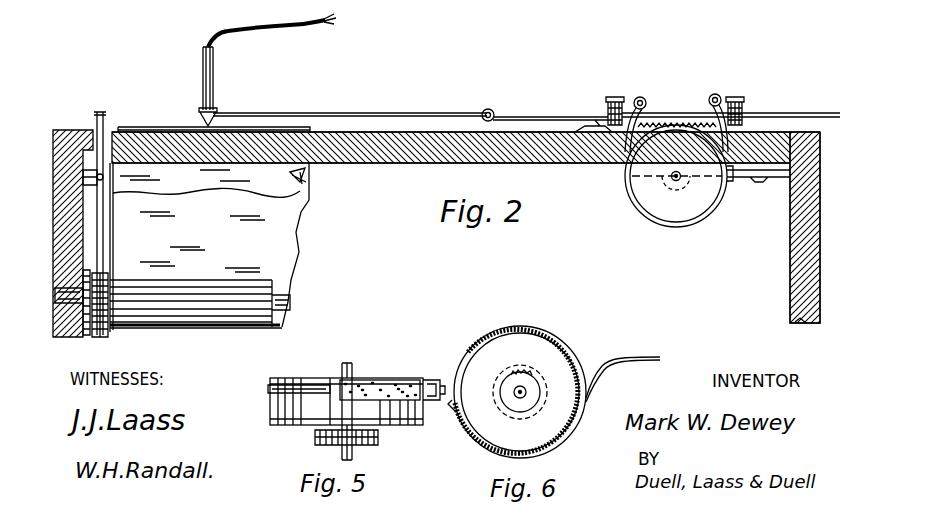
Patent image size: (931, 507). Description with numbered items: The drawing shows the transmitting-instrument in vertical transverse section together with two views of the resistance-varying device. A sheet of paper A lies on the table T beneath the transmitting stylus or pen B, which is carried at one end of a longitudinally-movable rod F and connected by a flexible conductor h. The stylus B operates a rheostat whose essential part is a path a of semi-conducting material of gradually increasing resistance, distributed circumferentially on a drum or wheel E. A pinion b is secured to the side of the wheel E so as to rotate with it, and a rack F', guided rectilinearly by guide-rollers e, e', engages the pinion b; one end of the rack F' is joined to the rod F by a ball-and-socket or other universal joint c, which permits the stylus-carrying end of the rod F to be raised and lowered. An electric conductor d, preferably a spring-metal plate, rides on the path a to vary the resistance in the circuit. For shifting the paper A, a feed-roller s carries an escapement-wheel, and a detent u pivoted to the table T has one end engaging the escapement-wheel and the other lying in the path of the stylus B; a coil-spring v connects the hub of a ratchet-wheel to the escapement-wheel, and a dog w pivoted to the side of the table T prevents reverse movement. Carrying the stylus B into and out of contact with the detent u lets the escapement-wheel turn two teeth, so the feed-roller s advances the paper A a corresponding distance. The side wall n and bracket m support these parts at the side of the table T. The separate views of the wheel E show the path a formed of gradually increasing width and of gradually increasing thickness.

In FIG. 2, the table T is at (466, 227).
In FIG. 2, the side wall n is at (73, 233).
In FIG. 2, the bracket m is at (84, 222).
In FIG. 2, the detent u is at (93, 219).
In FIG. 2, the sheet of paper A is at (170, 127).
In FIG. 2, the feed-roller s is at (256, 325).
In FIG. 2, the coil-spring v is at (78, 320).
In FIG. 2, the dog w is at (98, 326).
In FIG. 2, the transmitting stylus or pen B is at (213, 86).
In FIG. 2, the flexible conductor h is at (272, 25).
In FIG. 2, the longitudinally-movable rod F is at (410, 106).
In FIG. 2, the universal joint c is at (488, 105).
In FIG. 2, the rack F' is at (707, 111).
In FIG. 2, the guide-roller e is at (674, 117).
In FIG. 2, the guide-roller e' is at (717, 115).
In FIG. 2, the path of semi-conducting material a is at (716, 208).
In FIG. 5, the path of semi-conducting material a is at (380, 390).
In FIG. 6, the path of semi-conducting material a is at (572, 355).
In FIG. 2, the pinion b is at (677, 175).
In FIG. 2, the electric conductor d is at (742, 179).
In FIG. 5, the electric conductor d is at (433, 380).
In FIG. 6, the electric conductor d is at (623, 379).
In FIG. 5, the drum or wheel E is at (345, 411).
In FIG. 6, the drum or wheel E is at (520, 380).